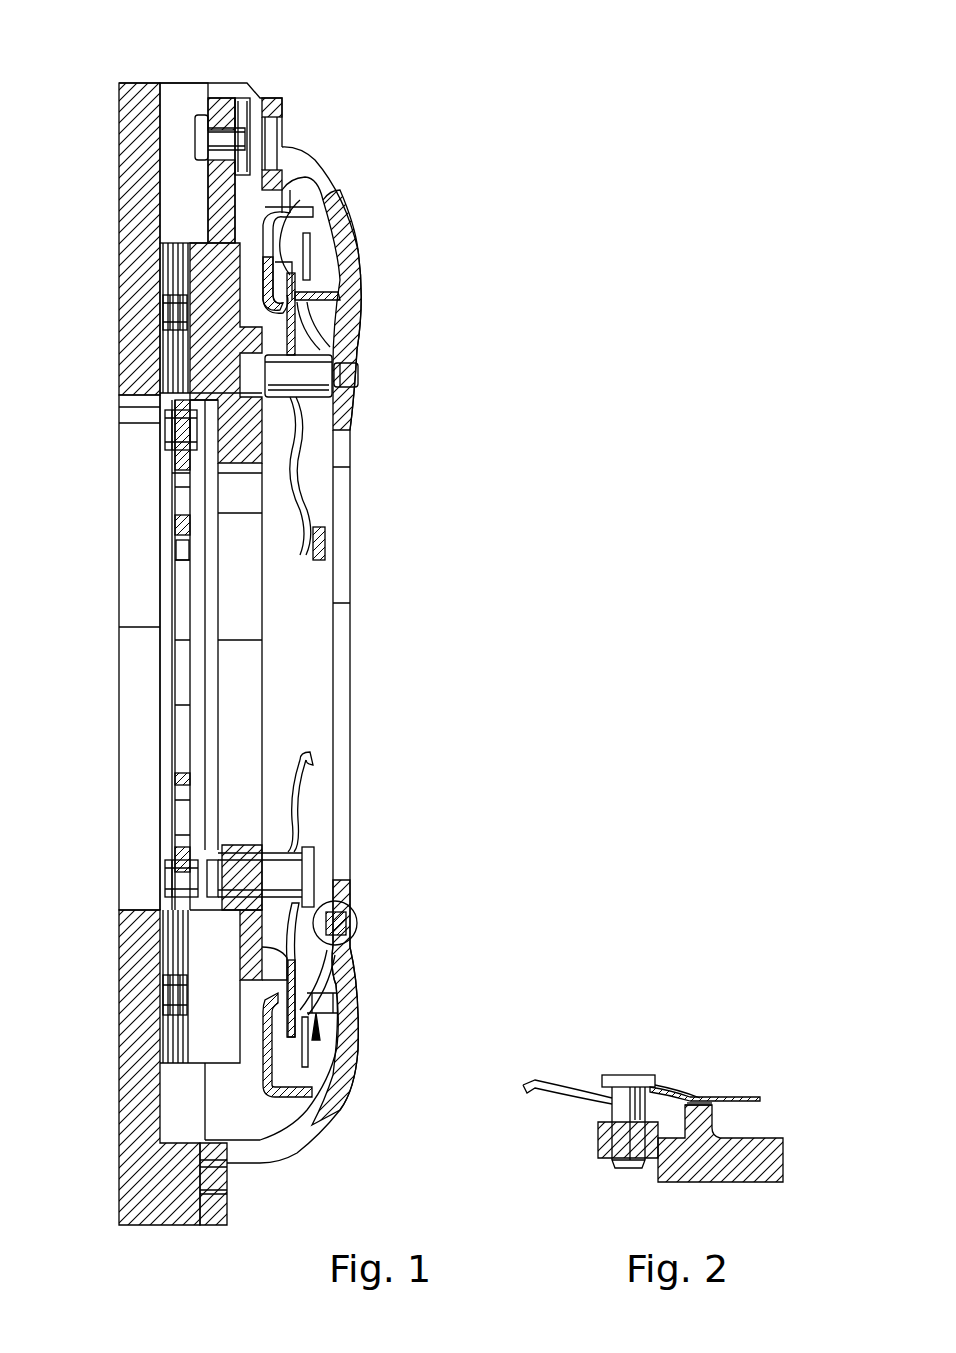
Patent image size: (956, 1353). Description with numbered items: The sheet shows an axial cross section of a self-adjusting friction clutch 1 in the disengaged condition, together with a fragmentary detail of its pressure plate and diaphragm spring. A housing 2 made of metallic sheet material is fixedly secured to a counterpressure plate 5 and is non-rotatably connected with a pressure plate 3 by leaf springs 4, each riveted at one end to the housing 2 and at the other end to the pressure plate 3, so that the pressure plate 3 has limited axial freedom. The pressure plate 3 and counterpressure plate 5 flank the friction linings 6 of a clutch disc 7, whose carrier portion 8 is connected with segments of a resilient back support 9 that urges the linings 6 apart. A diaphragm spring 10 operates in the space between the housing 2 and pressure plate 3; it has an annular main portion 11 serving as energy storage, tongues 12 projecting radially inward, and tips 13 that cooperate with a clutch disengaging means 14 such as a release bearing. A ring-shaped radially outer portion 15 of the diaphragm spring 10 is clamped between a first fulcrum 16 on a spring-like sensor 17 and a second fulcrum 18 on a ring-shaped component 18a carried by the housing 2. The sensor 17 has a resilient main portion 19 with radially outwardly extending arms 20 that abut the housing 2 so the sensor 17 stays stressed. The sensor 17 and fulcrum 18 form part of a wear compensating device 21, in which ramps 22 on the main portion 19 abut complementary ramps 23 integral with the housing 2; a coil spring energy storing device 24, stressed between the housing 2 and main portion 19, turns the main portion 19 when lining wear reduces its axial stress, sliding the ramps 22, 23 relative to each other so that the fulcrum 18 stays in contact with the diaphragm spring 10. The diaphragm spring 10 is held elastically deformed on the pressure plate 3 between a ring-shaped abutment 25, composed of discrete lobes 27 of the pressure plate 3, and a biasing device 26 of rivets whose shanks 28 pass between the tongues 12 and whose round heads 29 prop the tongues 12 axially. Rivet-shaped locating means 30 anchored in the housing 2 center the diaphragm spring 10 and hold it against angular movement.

In FIG. 1, the friction clutch 1 is at (320, 121).
In FIG. 1, the housing 2 is at (351, 428).
In FIG. 1, the pressure plate 3 is at (210, 1048).
In FIG. 2, the pressure plate 3 is at (672, 1172).
In FIG. 1, the leaf springs 4 is at (239, 106).
In FIG. 1, the counterpressure plate 5 is at (135, 1185).
In FIG. 1, the friction linings 6 is at (183, 270).
In FIG. 1, the clutch disc 7 is at (180, 520).
In FIG. 1, the carrier portion 8 is at (182, 468).
In FIG. 1, the back support 9 is at (182, 397).
In FIG. 1, the diaphragm spring 10 is at (307, 1040).
In FIG. 2, the diaphragm spring 10 is at (700, 1098).
In FIG. 1, the annular main portion 11 is at (298, 968).
In FIG. 2, the annular main portion 11 is at (745, 1097).
In FIG. 1, the tongues 12 is at (297, 816).
In FIG. 2, the tongues 12 is at (533, 1082).
In FIG. 1, the tips 13 is at (313, 765).
In FIG. 1, the clutch disengaging means 14 is at (325, 542).
In FIG. 1, the radially outer portion 15 is at (303, 287).
In FIG. 1, the first fulcrum 16 is at (307, 320).
In FIG. 1, the sensor 17 is at (268, 262).
In FIG. 1, the second fulcrum 18 is at (305, 299).
In FIG. 1, the ring-shaped component 18a is at (302, 296).
In FIG. 1, the resilient main portion 19 is at (270, 280).
In FIG. 1, the arms 20 is at (298, 197).
In FIG. 1, the wear compensating device 21 is at (316, 1035).
In FIG. 1, the ramps 22 is at (330, 1020).
In FIG. 1, the complementary ramps 23 is at (336, 1003).
In FIG. 1, the energy storing device 24 is at (352, 916).
In FIG. 1, the ring-shaped abutment 25 is at (287, 958).
In FIG. 2, the ring-shaped abutment 25 is at (690, 1100).
In FIG. 1, the biasing device 26 is at (290, 870).
In FIG. 2, the biasing device 26 is at (612, 1113).
In FIG. 2, the lobes 27 is at (708, 1117).
In FIG. 2, the shanks 28 is at (620, 1090).
In FIG. 2, the round heads 29 is at (638, 1085).
In FIG. 1, the locating means 30 is at (311, 376).